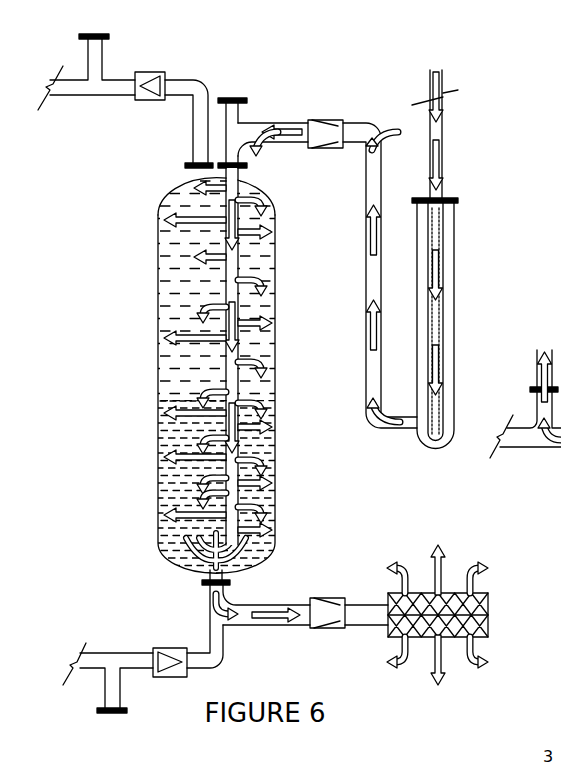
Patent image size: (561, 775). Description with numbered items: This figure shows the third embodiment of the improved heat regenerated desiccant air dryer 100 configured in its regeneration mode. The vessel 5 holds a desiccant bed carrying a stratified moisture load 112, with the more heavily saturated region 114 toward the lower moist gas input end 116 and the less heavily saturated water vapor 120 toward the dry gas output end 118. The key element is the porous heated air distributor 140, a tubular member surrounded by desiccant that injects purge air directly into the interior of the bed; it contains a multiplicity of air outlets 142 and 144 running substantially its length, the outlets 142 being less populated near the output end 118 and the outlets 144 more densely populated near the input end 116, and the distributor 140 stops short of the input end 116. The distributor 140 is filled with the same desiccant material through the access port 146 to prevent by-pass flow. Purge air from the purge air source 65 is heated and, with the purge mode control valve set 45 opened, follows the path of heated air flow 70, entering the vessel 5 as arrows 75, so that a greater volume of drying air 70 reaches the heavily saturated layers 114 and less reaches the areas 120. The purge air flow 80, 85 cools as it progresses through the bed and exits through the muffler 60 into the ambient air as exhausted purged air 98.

The heat regenerated desiccant air dryer 100 is at (299, 76).
The access port 146 is at (229, 98).
The purge mode control valve set 45 is at (322, 119).
The purge air source 65 is at (438, 80).
The heated air flow 70 is at (372, 235).
The dry gas output end 118 is at (182, 182).
The water vapor 120 is at (178, 238).
The air outlets 142 is at (262, 212).
The heated purge air entry arrows 75 is at (230, 242).
The porous heated air distributor 140 is at (244, 250).
The vessel 5 is at (208, 383).
The moisture load 112 is at (162, 361).
The purge air flow arrows 80 is at (176, 432).
The air outlets 144 is at (246, 446).
The heavily saturated region 114 is at (175, 496).
The moist gas input end 116 is at (178, 567).
The purge air flow arrows 85 is at (302, 600).
The exhausted purged air 98 is at (437, 557).
The muffler 60 is at (489, 612).